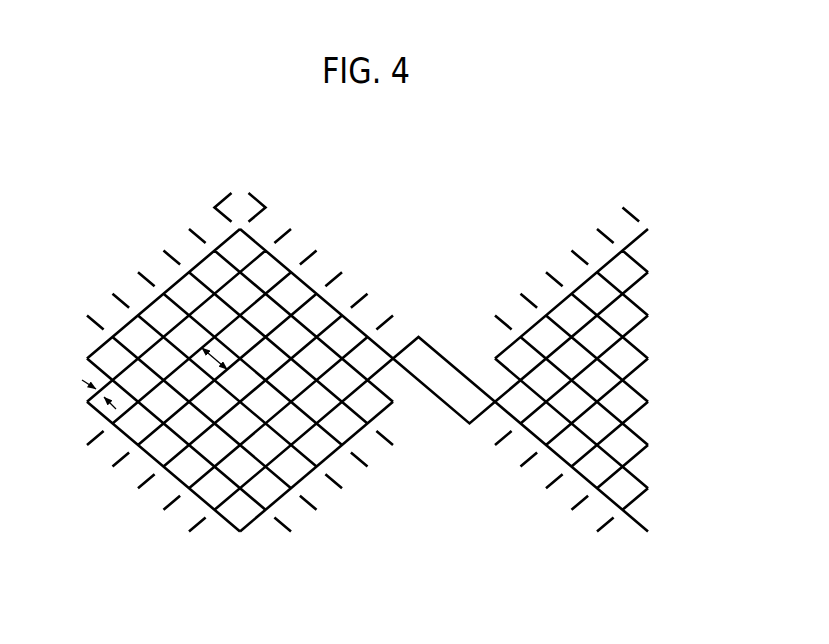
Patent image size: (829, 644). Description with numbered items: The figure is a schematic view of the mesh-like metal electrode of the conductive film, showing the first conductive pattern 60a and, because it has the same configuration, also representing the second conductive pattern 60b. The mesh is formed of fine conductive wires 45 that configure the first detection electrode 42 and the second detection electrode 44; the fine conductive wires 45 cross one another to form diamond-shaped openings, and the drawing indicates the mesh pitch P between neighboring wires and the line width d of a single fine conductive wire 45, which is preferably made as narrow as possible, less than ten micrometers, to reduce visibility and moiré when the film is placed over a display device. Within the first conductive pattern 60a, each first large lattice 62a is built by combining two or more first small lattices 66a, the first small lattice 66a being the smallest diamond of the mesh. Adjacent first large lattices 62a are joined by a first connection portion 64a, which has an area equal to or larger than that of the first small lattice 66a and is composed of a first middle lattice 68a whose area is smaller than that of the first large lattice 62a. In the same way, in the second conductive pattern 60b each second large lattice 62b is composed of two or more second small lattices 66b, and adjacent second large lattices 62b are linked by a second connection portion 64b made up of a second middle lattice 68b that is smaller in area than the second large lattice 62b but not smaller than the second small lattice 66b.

The first large lattice 62a is at (240, 350).
The second large lattice 62b is at (287, 258).
The first small lattice 66a is at (316, 507).
The second small lattice 66b is at (249, 522).
The fine conductive wire 45 is at (127, 368).
The mesh pitch P is at (214, 356).
The line width d is at (92, 390).
The first connection portion 64a is at (451, 331).
The second connection portion 64b is at (446, 321).
The first middle lattice 68a is at (445, 421).
The second middle lattice 68b is at (455, 395).
The first detection electrode 42 is at (571, 361).
The second detection electrode 44 is at (608, 260).
The first conductive pattern 60a is at (691, 207).
The second conductive pattern 60b is at (677, 222).